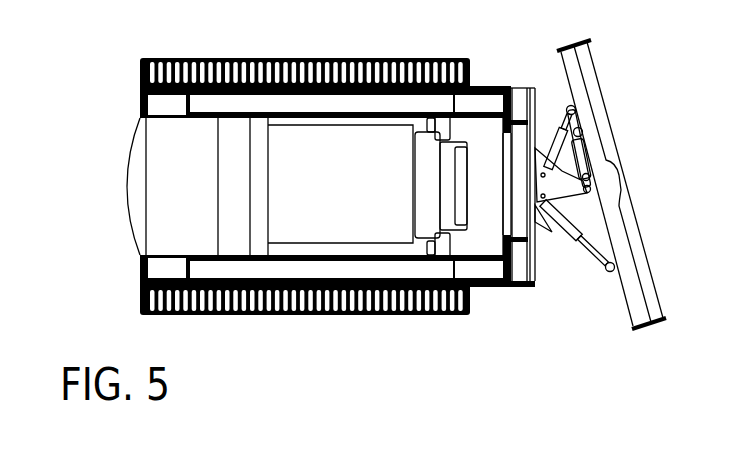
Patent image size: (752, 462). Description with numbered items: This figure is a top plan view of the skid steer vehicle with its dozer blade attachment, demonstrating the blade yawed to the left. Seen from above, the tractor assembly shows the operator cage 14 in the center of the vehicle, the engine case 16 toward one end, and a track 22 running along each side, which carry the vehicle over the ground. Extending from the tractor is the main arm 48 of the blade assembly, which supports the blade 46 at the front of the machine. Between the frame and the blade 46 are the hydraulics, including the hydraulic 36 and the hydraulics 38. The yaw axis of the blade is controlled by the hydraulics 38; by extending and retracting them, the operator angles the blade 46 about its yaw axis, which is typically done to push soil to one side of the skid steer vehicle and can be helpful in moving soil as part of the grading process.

The operator cage 14 is at (330, 138).
The engine case 16 is at (172, 187).
The track 22 is at (192, 58).
The hydraulic 36 is at (588, 153).
The hydraulic 38 is at (556, 138).
The blade 46 is at (595, 85).
The main arm 48 is at (402, 102).